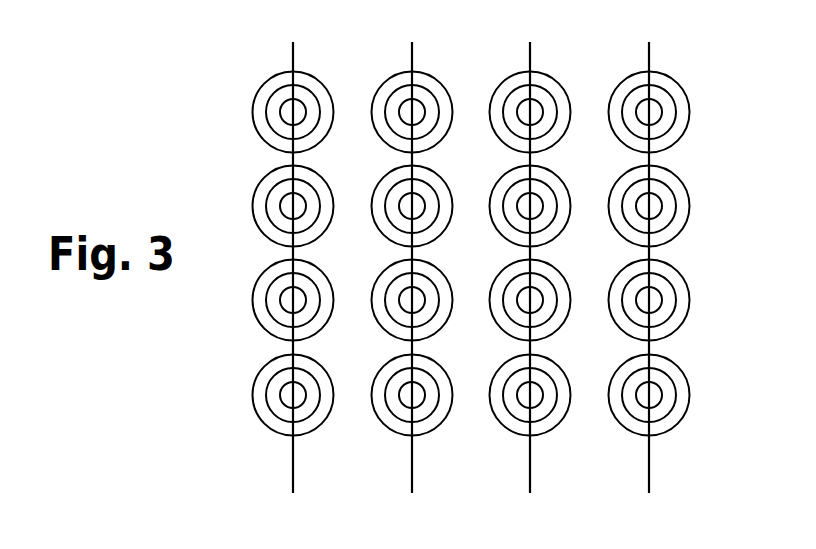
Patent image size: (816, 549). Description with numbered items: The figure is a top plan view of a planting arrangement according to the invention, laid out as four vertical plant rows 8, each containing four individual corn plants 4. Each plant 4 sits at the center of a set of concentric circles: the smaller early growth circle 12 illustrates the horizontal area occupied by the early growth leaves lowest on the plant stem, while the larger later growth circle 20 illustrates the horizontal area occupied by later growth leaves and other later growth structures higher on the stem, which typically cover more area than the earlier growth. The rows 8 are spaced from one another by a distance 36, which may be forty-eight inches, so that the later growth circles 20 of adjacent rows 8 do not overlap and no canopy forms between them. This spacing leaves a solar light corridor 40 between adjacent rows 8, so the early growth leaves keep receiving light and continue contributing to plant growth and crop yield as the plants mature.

The individual corn plant 4 is at (660, 98).
The early growth circle 12 is at (679, 111).
The later growth circle 20 is at (677, 145).
The plant row 8 is at (524, 48).
The distance between rows 36 is at (410, 470).
The solar light corridor 40 is at (470, 428).